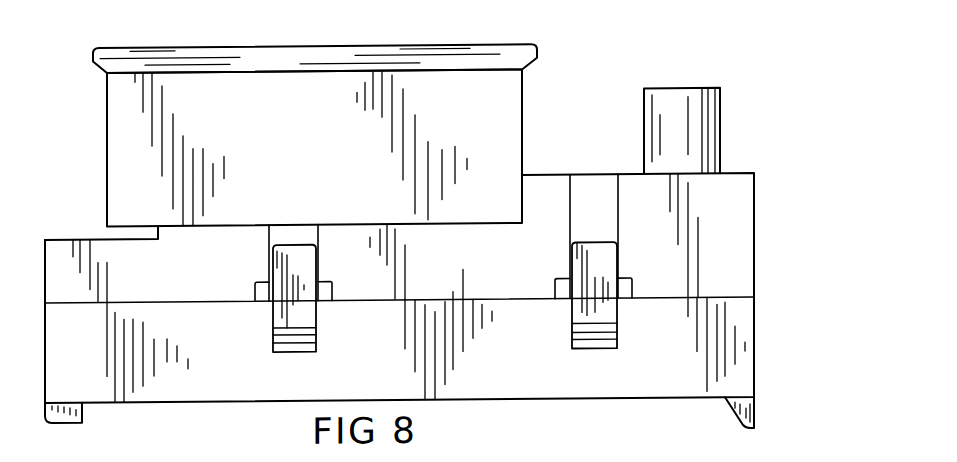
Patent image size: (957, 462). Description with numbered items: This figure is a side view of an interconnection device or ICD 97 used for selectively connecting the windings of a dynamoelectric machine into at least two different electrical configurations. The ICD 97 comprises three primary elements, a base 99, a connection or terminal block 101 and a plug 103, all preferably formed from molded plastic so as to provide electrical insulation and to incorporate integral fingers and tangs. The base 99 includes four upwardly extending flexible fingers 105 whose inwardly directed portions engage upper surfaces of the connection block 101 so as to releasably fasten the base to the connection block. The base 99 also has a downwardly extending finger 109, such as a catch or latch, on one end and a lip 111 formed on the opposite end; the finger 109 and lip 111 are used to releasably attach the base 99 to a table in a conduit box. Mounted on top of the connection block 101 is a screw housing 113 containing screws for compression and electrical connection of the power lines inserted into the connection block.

The interconnection device 97 is at (833, 204).
The base 99 is at (754, 346).
The connection block 101 is at (754, 264).
The plug 103 is at (522, 111).
The flexible fingers 105 is at (278, 315).
The finger 109 is at (754, 411).
The lip 111 is at (82, 415).
The screw housing 113 is at (720, 116).